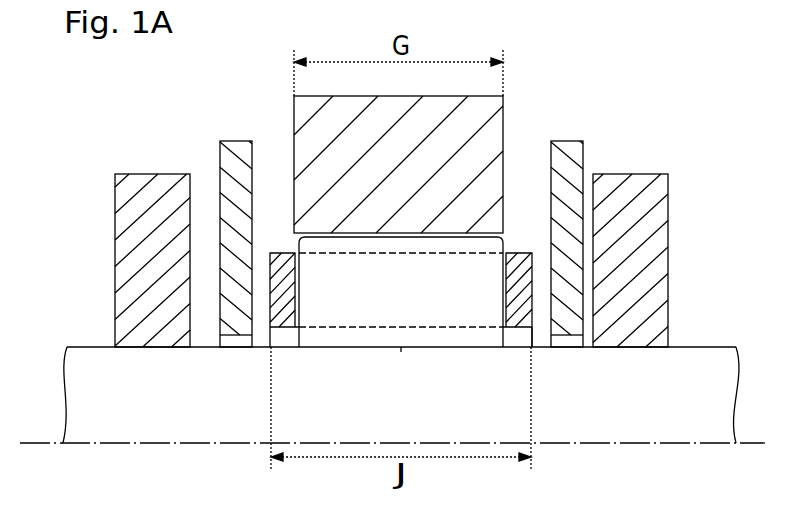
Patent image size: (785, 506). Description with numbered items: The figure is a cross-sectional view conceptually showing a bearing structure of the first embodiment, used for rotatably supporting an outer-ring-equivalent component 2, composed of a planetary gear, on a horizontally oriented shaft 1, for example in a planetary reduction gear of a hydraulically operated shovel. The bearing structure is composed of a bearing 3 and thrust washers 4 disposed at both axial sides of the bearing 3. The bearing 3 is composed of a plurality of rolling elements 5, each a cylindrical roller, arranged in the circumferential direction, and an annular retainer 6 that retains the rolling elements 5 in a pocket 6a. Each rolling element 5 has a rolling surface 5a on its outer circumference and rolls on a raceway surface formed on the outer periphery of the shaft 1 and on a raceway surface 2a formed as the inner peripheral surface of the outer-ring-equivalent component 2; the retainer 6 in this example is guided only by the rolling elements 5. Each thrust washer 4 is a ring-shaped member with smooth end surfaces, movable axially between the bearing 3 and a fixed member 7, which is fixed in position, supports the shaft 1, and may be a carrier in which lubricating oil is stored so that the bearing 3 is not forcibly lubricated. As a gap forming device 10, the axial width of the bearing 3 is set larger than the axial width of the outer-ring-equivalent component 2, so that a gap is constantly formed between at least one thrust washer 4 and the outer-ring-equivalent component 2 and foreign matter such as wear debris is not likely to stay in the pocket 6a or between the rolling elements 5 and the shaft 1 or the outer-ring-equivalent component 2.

The shaft 1 is at (88, 347).
The outer-ring-equivalent component 2 is at (304, 113).
The raceway surface 2a is at (348, 238).
The bearing 3 is at (568, 101).
The thrust washer 4 is at (218, 158).
The rolling element 5 is at (413, 234).
The rolling surface 5a is at (401, 348).
The retainer 6 is at (523, 253).
The pocket 6a is at (506, 287).
The fixed member 7 is at (116, 207).
The gap forming device 10 is at (250, 98).